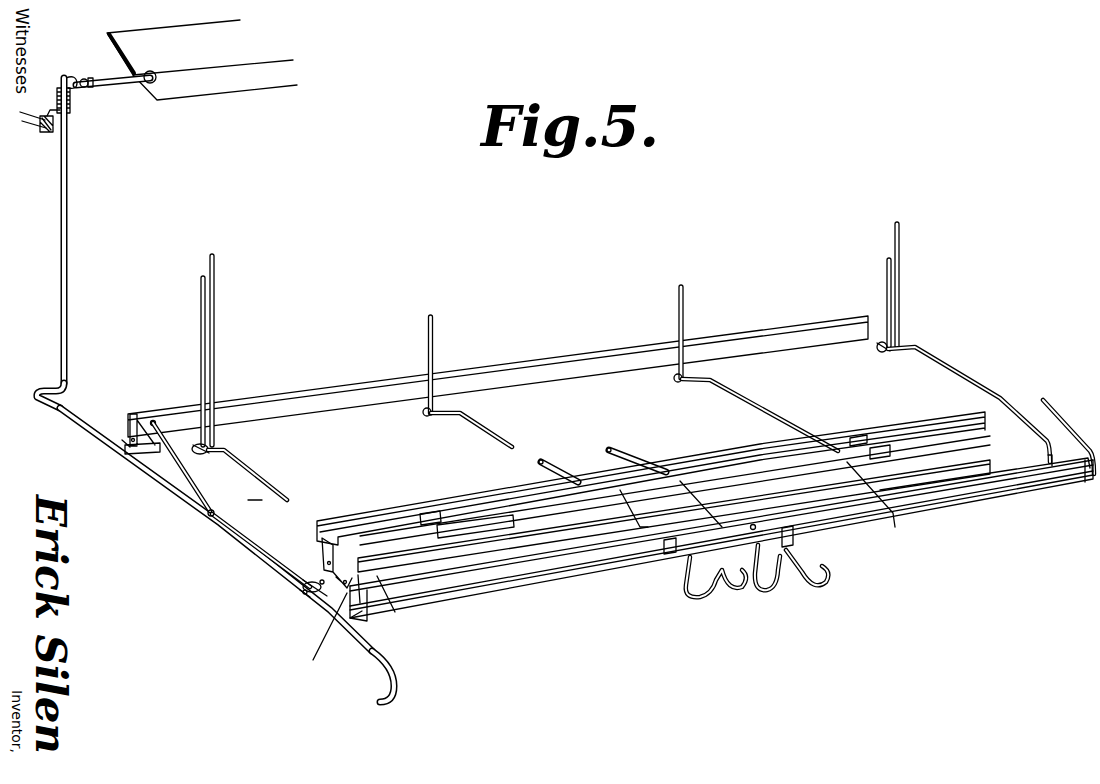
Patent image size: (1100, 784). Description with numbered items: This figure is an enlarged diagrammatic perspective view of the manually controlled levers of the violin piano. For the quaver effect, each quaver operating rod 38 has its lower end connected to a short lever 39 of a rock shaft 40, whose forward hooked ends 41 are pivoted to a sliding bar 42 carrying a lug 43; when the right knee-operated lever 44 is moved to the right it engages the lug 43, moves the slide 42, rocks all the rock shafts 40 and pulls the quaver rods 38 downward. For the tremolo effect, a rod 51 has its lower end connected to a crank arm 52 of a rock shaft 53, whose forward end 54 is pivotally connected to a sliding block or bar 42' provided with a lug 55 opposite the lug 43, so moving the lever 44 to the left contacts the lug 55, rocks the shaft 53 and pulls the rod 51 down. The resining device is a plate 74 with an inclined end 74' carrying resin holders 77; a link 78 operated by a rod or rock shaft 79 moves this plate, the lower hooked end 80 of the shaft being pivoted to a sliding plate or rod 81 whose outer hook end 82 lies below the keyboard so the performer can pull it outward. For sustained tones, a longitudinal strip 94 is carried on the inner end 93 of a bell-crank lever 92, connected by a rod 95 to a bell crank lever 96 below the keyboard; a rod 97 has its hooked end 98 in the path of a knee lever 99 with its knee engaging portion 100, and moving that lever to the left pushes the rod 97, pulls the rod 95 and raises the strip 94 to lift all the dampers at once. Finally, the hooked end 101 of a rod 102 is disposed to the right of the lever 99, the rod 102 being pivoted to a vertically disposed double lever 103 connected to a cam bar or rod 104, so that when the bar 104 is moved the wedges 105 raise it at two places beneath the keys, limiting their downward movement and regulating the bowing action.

The quaver operating rod 38 is at (886, 273).
The short lever 39 is at (907, 345).
The rock shaft 40 is at (977, 377).
The forward hooked ends 41 is at (1083, 473).
The sliding bar 42 is at (721, 539).
The sliding block or bar 42' is at (985, 465).
The lug 43 is at (797, 537).
The right knee-operated lever 44 is at (766, 542).
The rod 51 is at (900, 292).
The crank arm 52 is at (873, 345).
The rock shaft 53 is at (903, 372).
The forward end 54 is at (1052, 455).
The lug 55 is at (755, 525).
The plate 74 is at (215, 107).
The inclined end 74' is at (200, 47).
The holder 77 is at (73, 120).
The link 78 is at (122, 97).
The rod or rock shaft 79 is at (60, 260).
The lower hooked end 80 is at (53, 381).
The sliding plate or rod 81 is at (247, 560).
The outer hook end 82 is at (380, 692).
The bell-crank lever 92 is at (553, 382).
The inner end 93 is at (127, 433).
The longitudinal strip 94 is at (137, 412).
The rod 95 is at (208, 513).
The bell crank lever 96 is at (310, 580).
The rod 97 is at (393, 557).
The hooked end 98 is at (615, 545).
The knee lever 99 is at (643, 493).
The knee engaging portion 100 is at (697, 597).
The hooked end 101 is at (670, 532).
The rod 102 is at (543, 553).
The double lever 103 is at (313, 583).
The cam bar or rod 104 is at (343, 527).
The wedges 105 is at (887, 450).